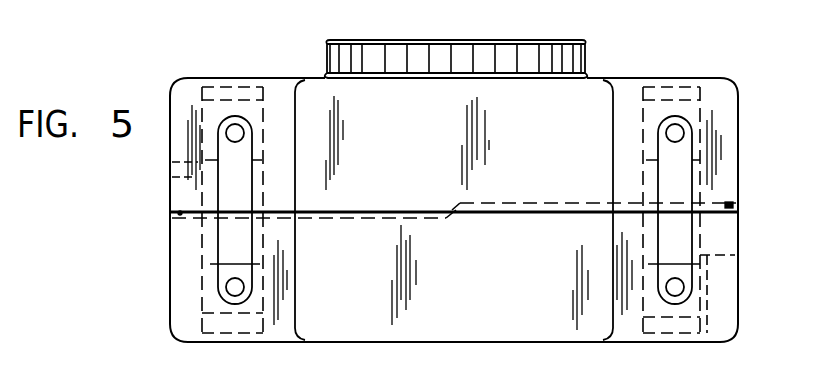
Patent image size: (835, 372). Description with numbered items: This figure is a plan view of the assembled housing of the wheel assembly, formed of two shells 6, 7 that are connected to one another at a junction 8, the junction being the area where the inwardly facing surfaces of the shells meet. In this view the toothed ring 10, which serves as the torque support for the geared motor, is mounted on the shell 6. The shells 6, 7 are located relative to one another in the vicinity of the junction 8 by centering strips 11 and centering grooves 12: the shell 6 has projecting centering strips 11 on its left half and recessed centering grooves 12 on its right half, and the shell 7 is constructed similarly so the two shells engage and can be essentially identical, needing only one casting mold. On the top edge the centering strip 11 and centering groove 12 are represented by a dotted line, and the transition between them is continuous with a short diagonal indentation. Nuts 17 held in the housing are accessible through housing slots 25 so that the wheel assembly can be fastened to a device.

The shell 6 is at (727, 162).
The shell 7 is at (722, 294).
The junction 8 is at (712, 213).
The toothed ring 10 is at (583, 54).
The centering strip 11 is at (178, 212).
The centering groove 12 is at (525, 205).
The nut 17 is at (692, 112).
The housing slot 25 is at (683, 242).